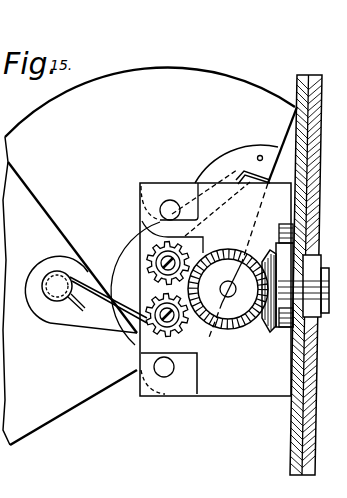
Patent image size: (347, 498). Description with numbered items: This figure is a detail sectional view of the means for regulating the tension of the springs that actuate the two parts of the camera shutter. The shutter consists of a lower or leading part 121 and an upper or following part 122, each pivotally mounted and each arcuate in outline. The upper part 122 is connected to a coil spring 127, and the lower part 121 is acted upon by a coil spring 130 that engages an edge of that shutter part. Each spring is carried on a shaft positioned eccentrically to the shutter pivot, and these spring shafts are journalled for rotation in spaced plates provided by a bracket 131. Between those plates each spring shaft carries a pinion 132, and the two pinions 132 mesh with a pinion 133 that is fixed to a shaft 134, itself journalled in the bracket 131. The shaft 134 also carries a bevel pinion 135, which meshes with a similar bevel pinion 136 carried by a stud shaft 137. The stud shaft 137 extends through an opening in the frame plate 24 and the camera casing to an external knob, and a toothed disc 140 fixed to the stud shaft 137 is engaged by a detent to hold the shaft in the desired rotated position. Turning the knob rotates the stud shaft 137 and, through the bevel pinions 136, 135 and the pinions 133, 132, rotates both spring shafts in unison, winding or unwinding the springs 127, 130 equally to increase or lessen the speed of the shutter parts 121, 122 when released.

The frame plate 24 is at (290, 428).
The lower shutter part 121 is at (56, 408).
The upper shutter part 122 is at (238, 88).
The coil spring 127 is at (97, 298).
The coil spring 130 is at (228, 165).
The bracket 131 is at (235, 387).
The pinion 132 is at (152, 255).
The pinion 133 is at (220, 250).
The shaft 134 is at (197, 355).
The bevel pinion 135 is at (219, 333).
The bevel pinion 136 is at (276, 266).
The stud shaft 137 is at (262, 332).
The toothed disc 140 is at (280, 340).